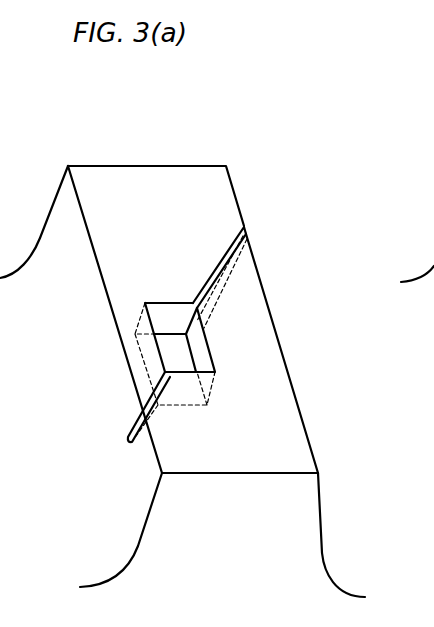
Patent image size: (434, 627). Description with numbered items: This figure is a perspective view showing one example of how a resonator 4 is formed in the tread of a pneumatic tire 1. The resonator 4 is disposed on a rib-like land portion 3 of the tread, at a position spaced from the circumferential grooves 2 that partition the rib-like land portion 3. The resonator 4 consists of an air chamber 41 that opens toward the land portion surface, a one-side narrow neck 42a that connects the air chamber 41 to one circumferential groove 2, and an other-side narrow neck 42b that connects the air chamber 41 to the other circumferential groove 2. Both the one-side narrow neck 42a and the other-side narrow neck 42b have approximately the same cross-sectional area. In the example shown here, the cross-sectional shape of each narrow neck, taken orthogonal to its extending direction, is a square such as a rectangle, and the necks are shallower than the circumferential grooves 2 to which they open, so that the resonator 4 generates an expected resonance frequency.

The tire 1 is at (224, 139).
The circumferential groove 2 is at (57, 410).
The rib-like land portion 3 is at (241, 189).
The resonator 4 is at (365, 282).
The air chamber 41 is at (170, 360).
The one-side narrow neck 42a is at (220, 268).
The other-side narrow neck 42b is at (150, 383).